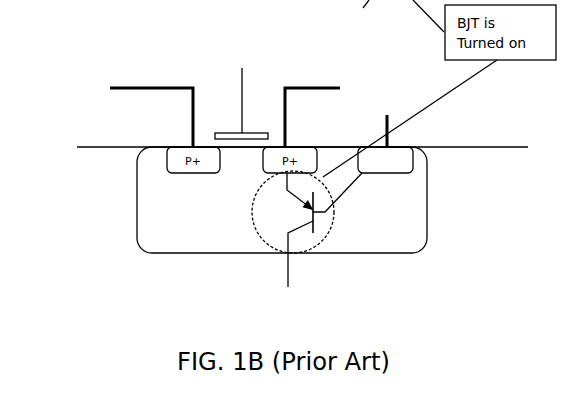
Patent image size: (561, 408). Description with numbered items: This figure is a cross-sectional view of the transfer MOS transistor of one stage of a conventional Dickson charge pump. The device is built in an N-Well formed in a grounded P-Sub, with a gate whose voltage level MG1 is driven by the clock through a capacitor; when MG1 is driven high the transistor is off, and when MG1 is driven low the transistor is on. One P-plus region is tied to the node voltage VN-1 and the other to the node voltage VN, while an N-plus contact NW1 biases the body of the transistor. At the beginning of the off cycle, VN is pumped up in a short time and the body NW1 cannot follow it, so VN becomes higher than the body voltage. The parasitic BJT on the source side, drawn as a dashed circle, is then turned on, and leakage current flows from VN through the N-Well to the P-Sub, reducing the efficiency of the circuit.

The gate voltage level MG1 is at (241, 95).
The body of transistor M1 NW1 is at (385, 135).
The node voltage VN is at (312, 108).
The node voltage VN-1 is at (151, 108).
The N-well N-Well is at (282, 200).
The P-type substrate P-Sub is at (343, 285).